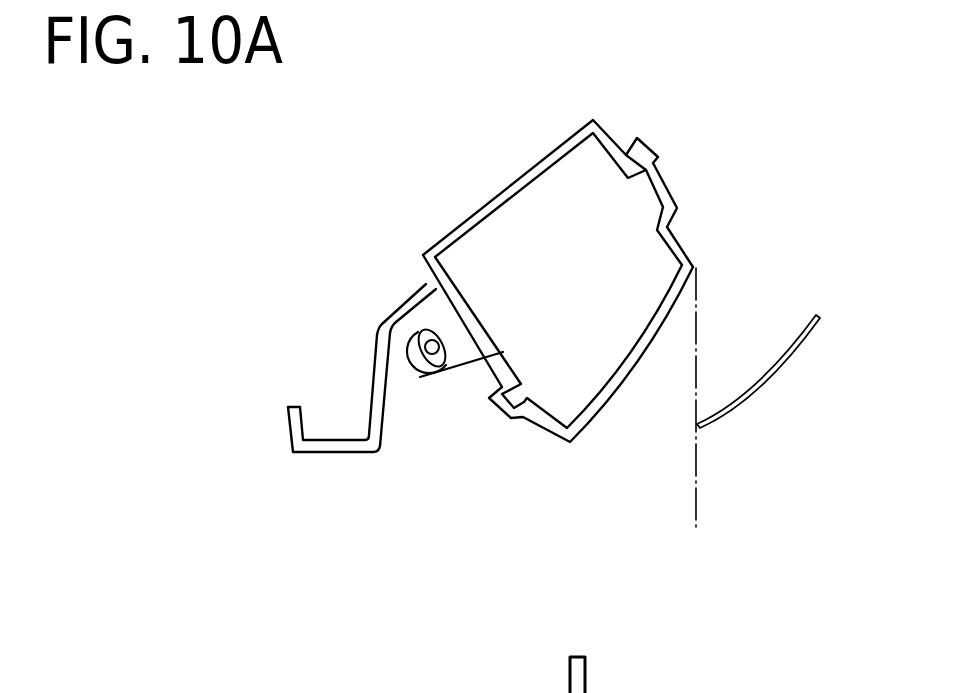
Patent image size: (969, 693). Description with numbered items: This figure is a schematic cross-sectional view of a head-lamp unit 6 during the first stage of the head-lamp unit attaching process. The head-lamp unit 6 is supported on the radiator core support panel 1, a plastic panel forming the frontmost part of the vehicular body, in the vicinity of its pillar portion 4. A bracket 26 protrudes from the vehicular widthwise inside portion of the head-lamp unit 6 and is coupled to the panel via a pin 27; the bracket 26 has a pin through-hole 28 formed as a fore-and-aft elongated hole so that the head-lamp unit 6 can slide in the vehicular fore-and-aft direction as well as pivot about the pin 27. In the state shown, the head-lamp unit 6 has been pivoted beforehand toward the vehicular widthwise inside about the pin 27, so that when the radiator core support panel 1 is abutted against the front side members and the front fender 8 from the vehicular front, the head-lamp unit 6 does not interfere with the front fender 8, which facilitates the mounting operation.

The head-lamp unit 6 is at (506, 172).
The pillar portion 4 is at (349, 428).
The radiator core support panel 1 is at (330, 453).
The pin 27 is at (421, 331).
The pin through-hole 28 is at (428, 358).
The bracket 26 is at (448, 364).
The front fender 8 is at (768, 388).